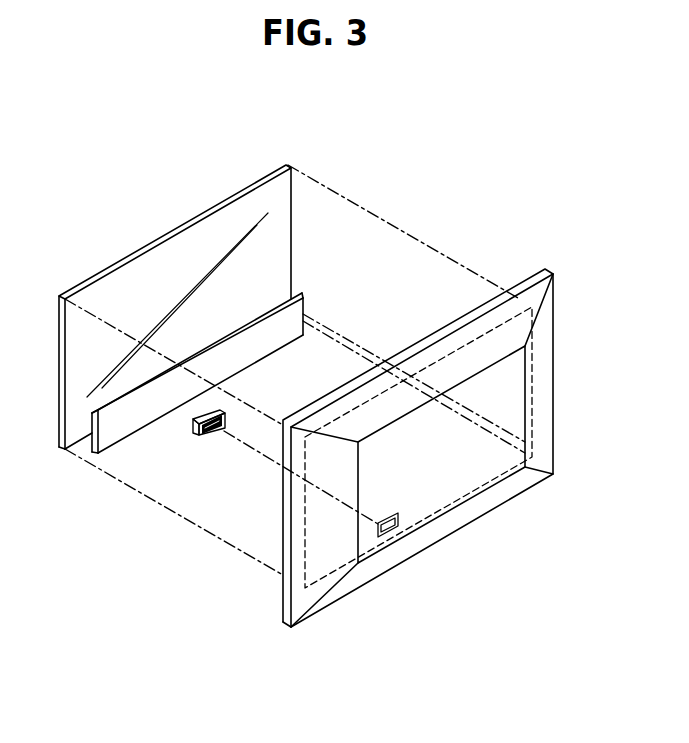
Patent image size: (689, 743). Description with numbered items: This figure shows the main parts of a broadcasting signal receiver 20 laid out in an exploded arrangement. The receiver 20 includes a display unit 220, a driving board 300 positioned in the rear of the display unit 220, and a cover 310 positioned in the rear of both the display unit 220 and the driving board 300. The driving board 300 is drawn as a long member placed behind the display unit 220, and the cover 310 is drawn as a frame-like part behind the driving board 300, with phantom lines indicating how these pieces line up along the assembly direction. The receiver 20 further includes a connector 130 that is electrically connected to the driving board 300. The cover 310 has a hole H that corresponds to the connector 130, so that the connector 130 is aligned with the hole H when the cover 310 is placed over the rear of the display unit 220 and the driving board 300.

The broadcasting signal receiver 20 is at (195, 144).
The connector 130 is at (201, 438).
The display unit 220 is at (165, 258).
The driving board 300 is at (145, 405).
The cover 310 is at (419, 411).
The hole H is at (386, 530).